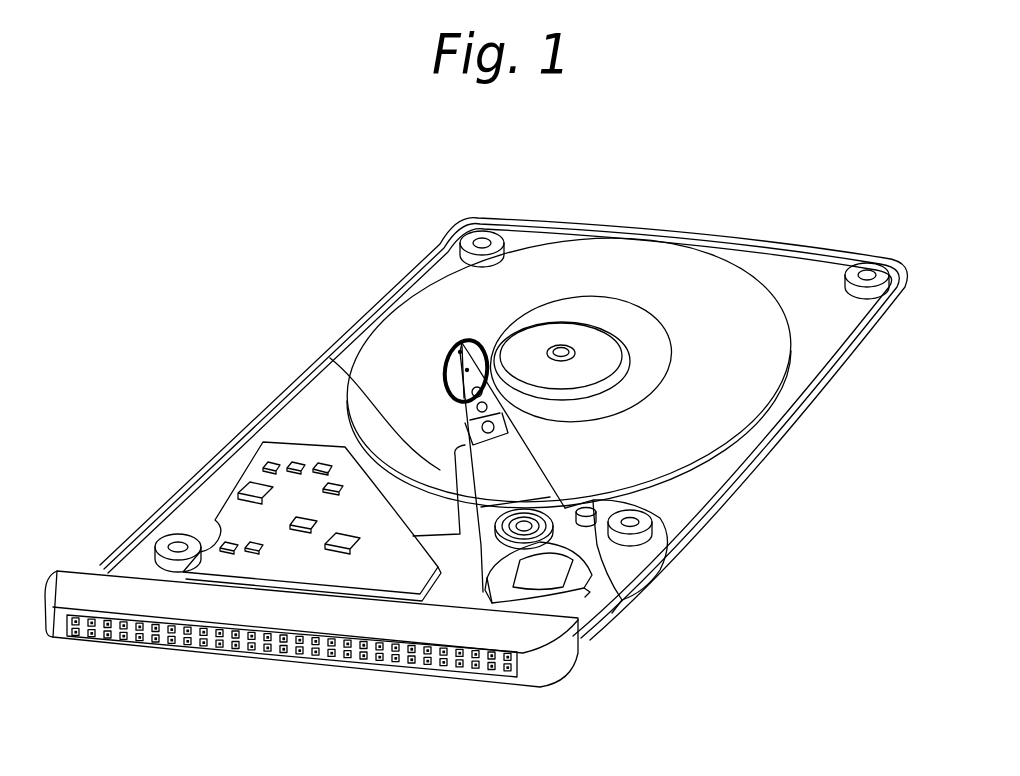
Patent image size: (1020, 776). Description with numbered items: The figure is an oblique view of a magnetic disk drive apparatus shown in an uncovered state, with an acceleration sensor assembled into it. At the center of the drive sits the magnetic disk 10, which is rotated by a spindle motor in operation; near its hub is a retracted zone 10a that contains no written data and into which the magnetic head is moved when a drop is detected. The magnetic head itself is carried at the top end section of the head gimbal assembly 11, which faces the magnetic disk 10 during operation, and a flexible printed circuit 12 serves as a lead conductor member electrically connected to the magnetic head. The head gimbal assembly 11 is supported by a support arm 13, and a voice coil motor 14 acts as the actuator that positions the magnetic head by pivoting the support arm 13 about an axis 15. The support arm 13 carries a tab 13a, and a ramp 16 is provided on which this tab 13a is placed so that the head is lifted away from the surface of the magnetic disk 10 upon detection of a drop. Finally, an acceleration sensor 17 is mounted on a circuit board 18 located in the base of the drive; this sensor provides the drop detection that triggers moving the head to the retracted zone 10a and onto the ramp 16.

The magnetic disk 10 is at (684, 268).
The retracted zone 10a is at (594, 312).
The head gimbal assembly (HGA) 11 is at (453, 397).
The flexible printed circuit (FPC) 12 is at (482, 338).
The support arm 13 is at (523, 463).
The tab 13a is at (668, 530).
The voice coil motor (VCM) 14 is at (580, 594).
The axis 15 is at (500, 528).
The ramp 16 is at (592, 526).
The acceleration sensor 17 is at (292, 525).
The circuit board 18 is at (315, 566).